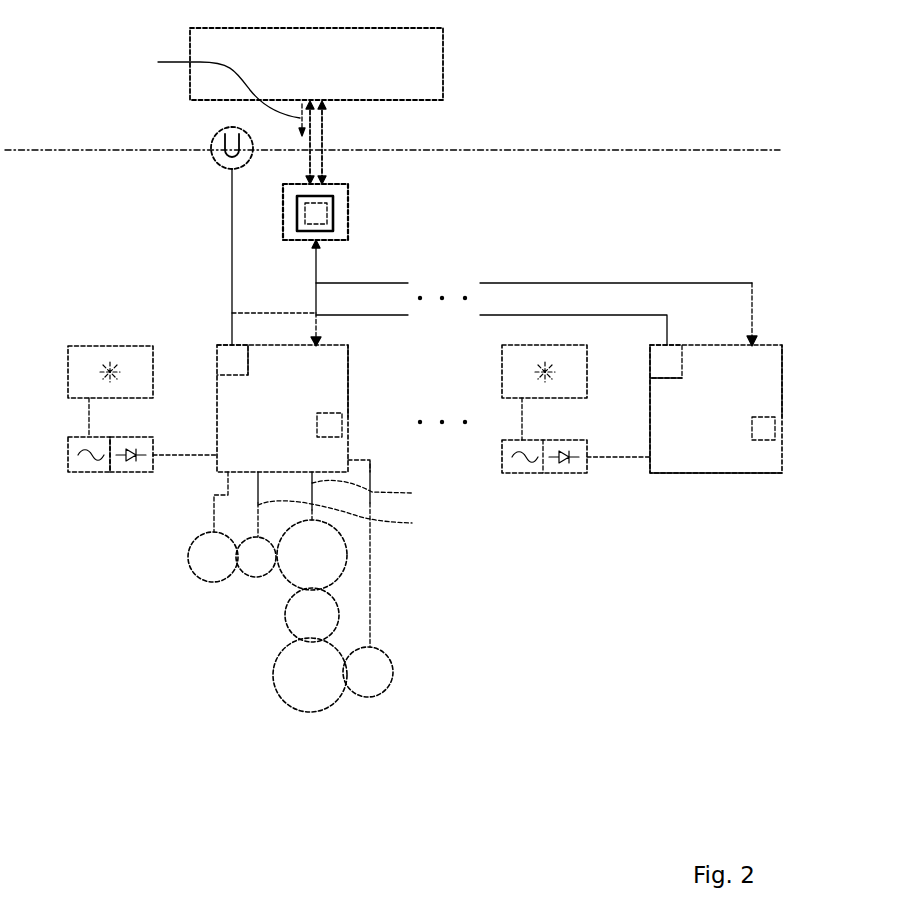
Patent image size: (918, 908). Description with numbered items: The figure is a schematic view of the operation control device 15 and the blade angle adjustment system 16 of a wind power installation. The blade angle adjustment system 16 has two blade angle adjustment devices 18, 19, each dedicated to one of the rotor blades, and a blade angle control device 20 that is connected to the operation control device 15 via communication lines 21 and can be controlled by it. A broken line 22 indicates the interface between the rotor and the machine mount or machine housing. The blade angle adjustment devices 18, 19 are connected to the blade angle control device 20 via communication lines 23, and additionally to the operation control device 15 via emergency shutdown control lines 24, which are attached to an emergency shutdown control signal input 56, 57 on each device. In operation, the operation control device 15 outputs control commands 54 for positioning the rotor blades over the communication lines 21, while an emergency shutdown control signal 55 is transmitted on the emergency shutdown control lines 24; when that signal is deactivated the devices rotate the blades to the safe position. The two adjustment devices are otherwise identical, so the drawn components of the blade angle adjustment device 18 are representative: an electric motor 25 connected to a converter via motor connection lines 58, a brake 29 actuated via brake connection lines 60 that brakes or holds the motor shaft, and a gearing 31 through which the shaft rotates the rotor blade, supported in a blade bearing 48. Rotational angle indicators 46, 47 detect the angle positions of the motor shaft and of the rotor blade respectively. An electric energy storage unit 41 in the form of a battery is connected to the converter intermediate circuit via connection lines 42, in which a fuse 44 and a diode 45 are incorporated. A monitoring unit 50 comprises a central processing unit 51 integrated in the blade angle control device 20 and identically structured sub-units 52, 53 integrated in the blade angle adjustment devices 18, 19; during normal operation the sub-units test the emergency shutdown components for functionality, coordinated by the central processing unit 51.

The operation control device 15 is at (443, 28).
The blade angle adjustment system 16 is at (716, 178).
The blade angle adjustment device 18 is at (190, 489).
The blade angle adjustment device 19 is at (618, 485).
The blade angle control device 20 is at (350, 187).
The communication lines 21 is at (326, 124).
The broken line 22 is at (645, 150).
The communication lines 23 is at (320, 266).
The emergency shutdown control lines 24 is at (230, 203).
The electric motor 25 is at (347, 556).
The brake 29 is at (252, 578).
The gearing 31 is at (339, 614).
The electric energy storage unit 41 is at (84, 344).
The connection lines 42 is at (181, 454).
The fuse 44 is at (88, 473).
The diode 45 is at (127, 473).
The rotational angle indicator 46 is at (196, 575).
The rotational angle indicator 47 is at (395, 672).
The blade bearing 48 is at (290, 698).
The monitoring unit 50 is at (298, 213).
The central processing unit 51 is at (336, 213).
The sub-unit 52 is at (344, 430).
The sub-unit 53 is at (762, 441).
The control commands 54 is at (214, 83).
The emergency shutdown control signal 55 is at (214, 138).
The emergency shutdown control signal input 56 is at (220, 345).
The emergency shutdown control signal input 57 is at (652, 357).
The motor connection lines 58 is at (379, 493).
The brake connection lines 60 is at (352, 518).